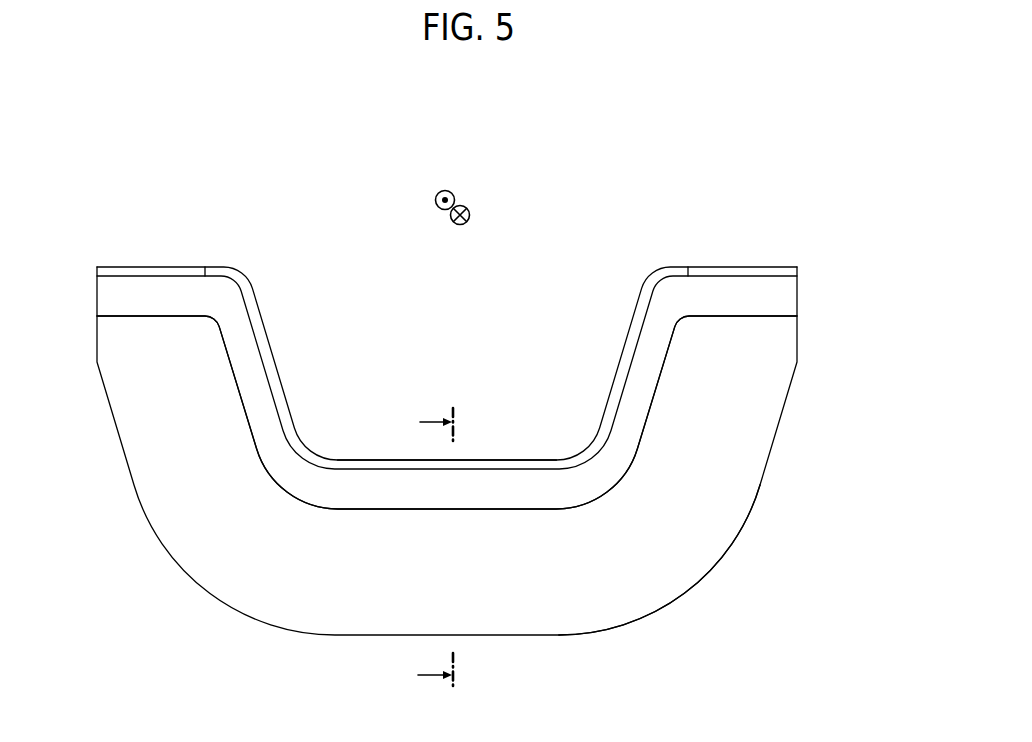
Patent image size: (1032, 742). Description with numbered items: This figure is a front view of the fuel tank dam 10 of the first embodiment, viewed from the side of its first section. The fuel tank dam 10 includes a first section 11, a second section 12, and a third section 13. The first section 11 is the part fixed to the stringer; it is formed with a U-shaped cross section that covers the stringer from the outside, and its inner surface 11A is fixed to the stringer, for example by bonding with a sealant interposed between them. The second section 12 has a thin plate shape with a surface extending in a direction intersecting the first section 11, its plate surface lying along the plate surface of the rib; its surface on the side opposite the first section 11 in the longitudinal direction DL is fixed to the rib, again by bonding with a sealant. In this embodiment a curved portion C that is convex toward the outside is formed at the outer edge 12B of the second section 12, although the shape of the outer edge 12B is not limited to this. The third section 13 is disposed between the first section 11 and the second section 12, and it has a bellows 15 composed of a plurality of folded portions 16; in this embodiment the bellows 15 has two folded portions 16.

The fuel tank dam 10 is at (758, 185).
The first section 11 is at (500, 469).
The inner surface 11A is at (378, 460).
The second section 12 is at (755, 447).
The outer edge 12B is at (733, 540).
The third section 13 is at (623, 478).
The bellows 15 is at (660, 358).
The folded portions 16 is at (447, 412).
The curved portion C is at (663, 605).
The longitudinal direction DL is at (443, 187).